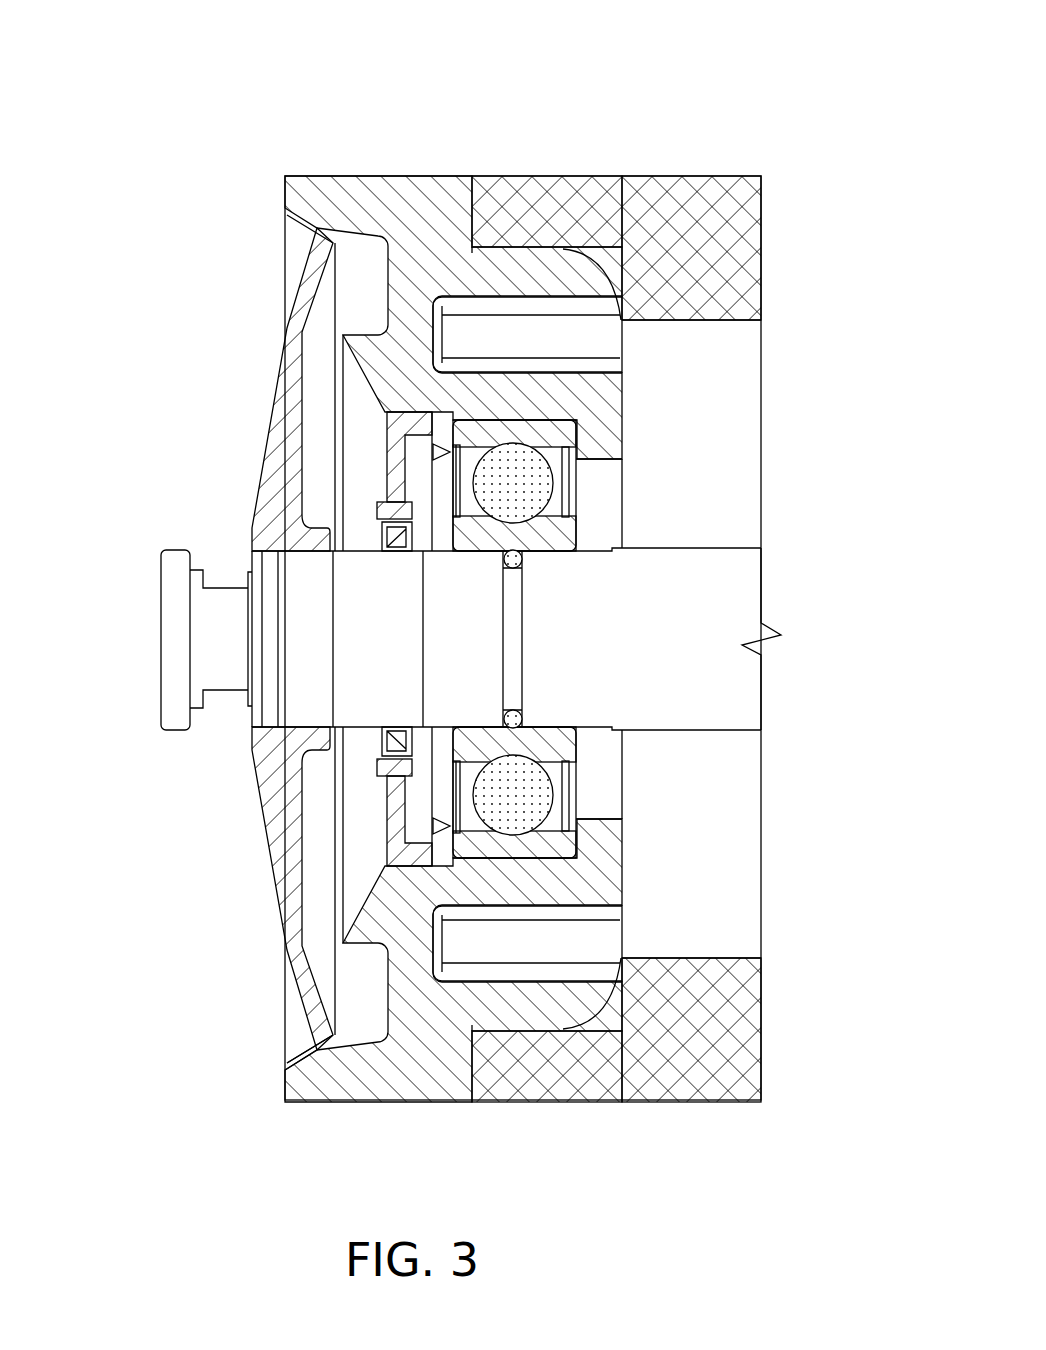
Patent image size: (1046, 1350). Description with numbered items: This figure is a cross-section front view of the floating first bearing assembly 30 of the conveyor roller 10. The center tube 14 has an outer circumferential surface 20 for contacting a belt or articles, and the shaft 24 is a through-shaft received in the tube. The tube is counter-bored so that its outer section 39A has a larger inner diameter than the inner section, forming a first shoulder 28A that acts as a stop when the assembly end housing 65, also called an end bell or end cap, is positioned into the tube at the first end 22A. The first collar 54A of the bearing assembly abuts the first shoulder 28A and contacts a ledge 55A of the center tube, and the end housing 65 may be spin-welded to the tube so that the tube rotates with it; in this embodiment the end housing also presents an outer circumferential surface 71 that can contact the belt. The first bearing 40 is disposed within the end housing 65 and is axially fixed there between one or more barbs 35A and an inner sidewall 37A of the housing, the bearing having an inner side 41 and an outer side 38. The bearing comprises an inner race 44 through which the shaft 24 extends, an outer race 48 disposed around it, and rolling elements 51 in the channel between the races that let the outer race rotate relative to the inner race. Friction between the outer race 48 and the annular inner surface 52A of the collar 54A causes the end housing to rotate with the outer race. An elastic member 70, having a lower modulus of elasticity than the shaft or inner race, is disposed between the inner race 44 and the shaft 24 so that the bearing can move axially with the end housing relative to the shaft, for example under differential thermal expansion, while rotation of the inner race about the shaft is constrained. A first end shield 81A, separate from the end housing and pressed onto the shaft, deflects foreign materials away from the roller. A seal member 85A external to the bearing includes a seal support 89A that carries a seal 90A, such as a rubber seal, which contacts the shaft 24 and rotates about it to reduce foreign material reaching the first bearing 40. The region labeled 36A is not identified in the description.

The conveyor roller 10 is at (214, 82).
The center tube 14 is at (645, 200).
The outer circumferential surface 20 is at (705, 176).
The first end 22A is at (445, 200).
The shaft 24 is at (160, 636).
The first shoulder 28A is at (608, 247).
The first bearing assembly 30 is at (266, 211).
The barbs 35A is at (433, 447).
The bearing seat shoulder 36A is at (557, 272).
The inner sidewall 37A is at (598, 445).
The outer side 38 is at (450, 858).
The outer section 39A is at (563, 1065).
The first bearing 40 is at (527, 432).
The inner side 41 is at (594, 850).
The inner race 44 is at (478, 518).
The outer race 48 is at (392, 413).
The rolling elements 51 is at (500, 483).
The annular inner surface 52A is at (550, 448).
The first collar 54A is at (538, 356).
The ledge 55A is at (481, 236).
The assembly end housing 65 is at (451, 200).
The elastic member 70 is at (523, 720).
The outer circumferential surface 71 is at (328, 1104).
The first end shield 81A is at (330, 990).
The seal member 85A is at (366, 851).
The seal support 89A is at (385, 815).
The seal 90A is at (383, 755).